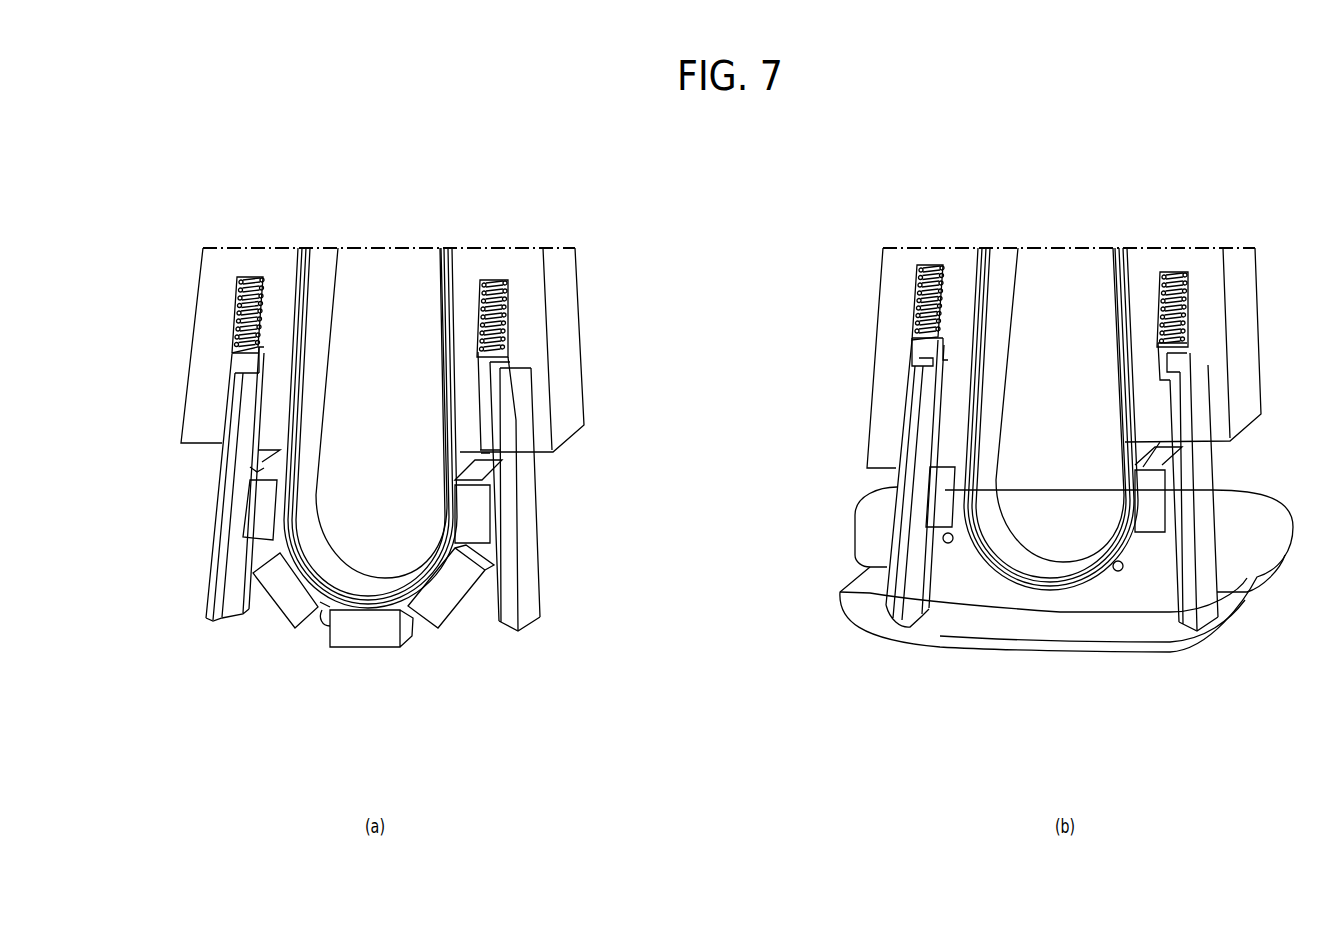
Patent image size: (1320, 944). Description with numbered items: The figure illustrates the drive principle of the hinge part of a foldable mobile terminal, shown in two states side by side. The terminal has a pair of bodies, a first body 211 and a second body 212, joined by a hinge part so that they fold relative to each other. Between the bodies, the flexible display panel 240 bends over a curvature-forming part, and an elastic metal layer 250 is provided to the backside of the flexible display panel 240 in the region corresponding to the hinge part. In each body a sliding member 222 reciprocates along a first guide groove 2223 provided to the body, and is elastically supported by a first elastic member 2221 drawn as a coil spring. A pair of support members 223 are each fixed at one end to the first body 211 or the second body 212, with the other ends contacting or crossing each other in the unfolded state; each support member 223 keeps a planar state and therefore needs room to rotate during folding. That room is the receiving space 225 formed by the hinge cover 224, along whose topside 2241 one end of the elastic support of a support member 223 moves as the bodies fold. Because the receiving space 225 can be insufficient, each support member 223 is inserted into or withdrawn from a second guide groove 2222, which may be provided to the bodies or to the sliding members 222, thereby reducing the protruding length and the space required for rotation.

The first body 211 is at (220, 265).
The second body 212 is at (512, 265).
The sliding member 222 is at (210, 521).
The first elastic member 2221 is at (232, 323).
The second guide groove 2222 is at (928, 350).
The first guide groove 2223 is at (230, 303).
The support member 223 is at (923, 427).
The hinge cover 224 is at (938, 642).
The topside of the hinge member 2241 is at (990, 642).
The receiving space 225 is at (1130, 597).
The flexible display panel 240 is at (315, 248).
The elastic metal layer 250 is at (302, 248).